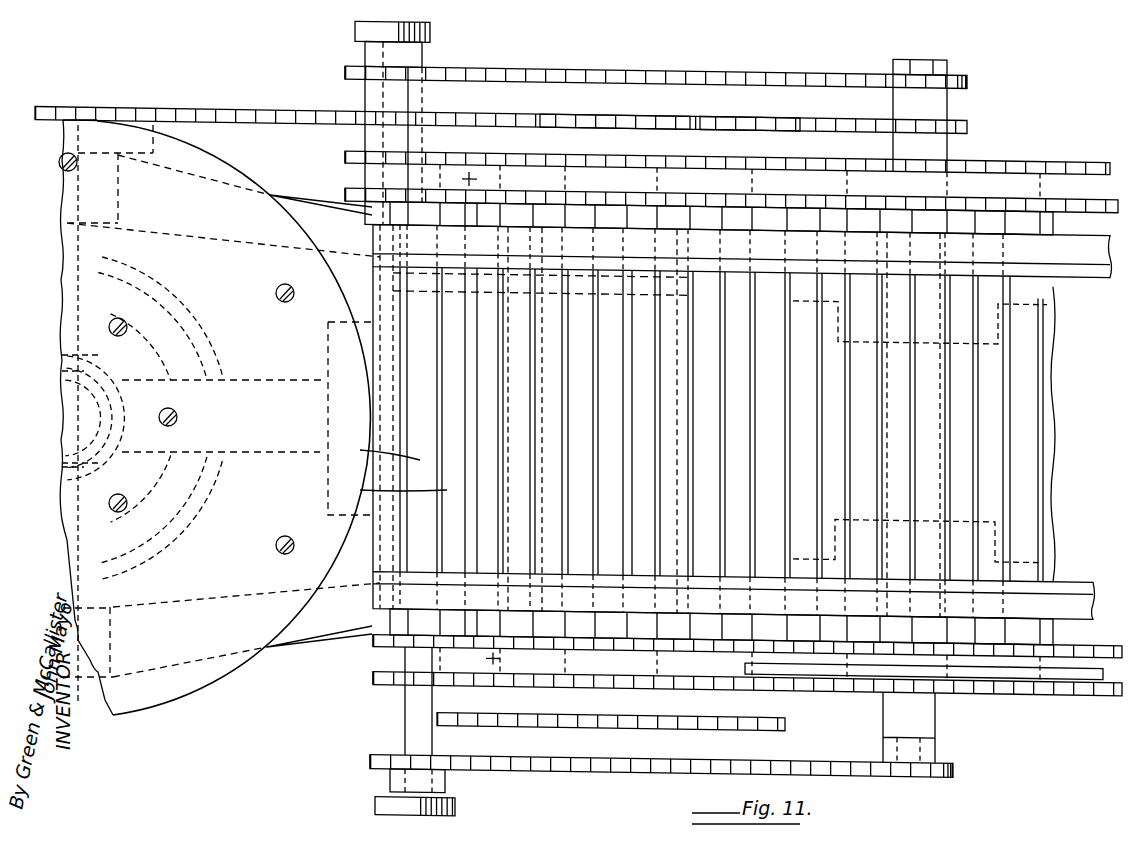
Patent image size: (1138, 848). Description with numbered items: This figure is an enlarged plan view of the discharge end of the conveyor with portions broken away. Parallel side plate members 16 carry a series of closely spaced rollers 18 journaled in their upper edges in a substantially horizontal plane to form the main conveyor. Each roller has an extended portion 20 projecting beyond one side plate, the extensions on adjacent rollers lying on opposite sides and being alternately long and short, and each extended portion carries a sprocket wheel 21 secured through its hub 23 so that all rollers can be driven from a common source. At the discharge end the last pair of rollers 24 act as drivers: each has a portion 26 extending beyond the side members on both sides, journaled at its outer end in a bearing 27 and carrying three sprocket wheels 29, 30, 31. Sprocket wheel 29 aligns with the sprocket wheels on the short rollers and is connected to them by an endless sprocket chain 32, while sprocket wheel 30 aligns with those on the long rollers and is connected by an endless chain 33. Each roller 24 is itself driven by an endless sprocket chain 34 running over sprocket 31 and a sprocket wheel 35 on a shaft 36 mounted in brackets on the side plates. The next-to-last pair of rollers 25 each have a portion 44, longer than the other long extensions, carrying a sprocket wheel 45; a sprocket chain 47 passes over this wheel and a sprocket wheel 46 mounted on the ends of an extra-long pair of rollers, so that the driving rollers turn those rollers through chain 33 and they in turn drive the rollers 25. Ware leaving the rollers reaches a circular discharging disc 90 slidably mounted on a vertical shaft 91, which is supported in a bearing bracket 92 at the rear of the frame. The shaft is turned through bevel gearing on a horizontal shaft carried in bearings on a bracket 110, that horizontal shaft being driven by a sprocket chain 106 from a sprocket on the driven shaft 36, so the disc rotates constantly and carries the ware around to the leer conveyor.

The side plate members 16 is at (1070, 285).
The rollers 18 is at (590, 440).
The extended portion 20 is at (1010, 628).
The sprocket wheel 21 is at (582, 167).
The hub 23 is at (715, 426).
The pair of rollers 24 is at (379, 443).
The pair of rollers 25 is at (393, 480).
The portion 26 is at (383, 140).
The bearing 27 is at (430, 35).
The sprocket wheel 29 is at (345, 197).
The sprocket wheel 30 is at (345, 162).
The sprocket wheel 31 is at (345, 80).
The endless sprocket chain 32 is at (600, 202).
The endless chain 33 is at (520, 163).
The endless sprocket chain 34 is at (642, 76).
The sprocket wheel 35 is at (960, 78).
The shaft 36 is at (947, 108).
The portion 44 is at (494, 420).
The sprocket wheel 45 is at (468, 120).
The sprocket wheel 46 is at (726, 124).
The sprocket chain 47 is at (596, 124).
The disc 90 is at (271, 502).
The vertical shaft 91 is at (62, 415).
The bearing bracket 92 is at (298, 428).
The sprocket chain 106 is at (216, 117).
The bracket 110 is at (305, 622).